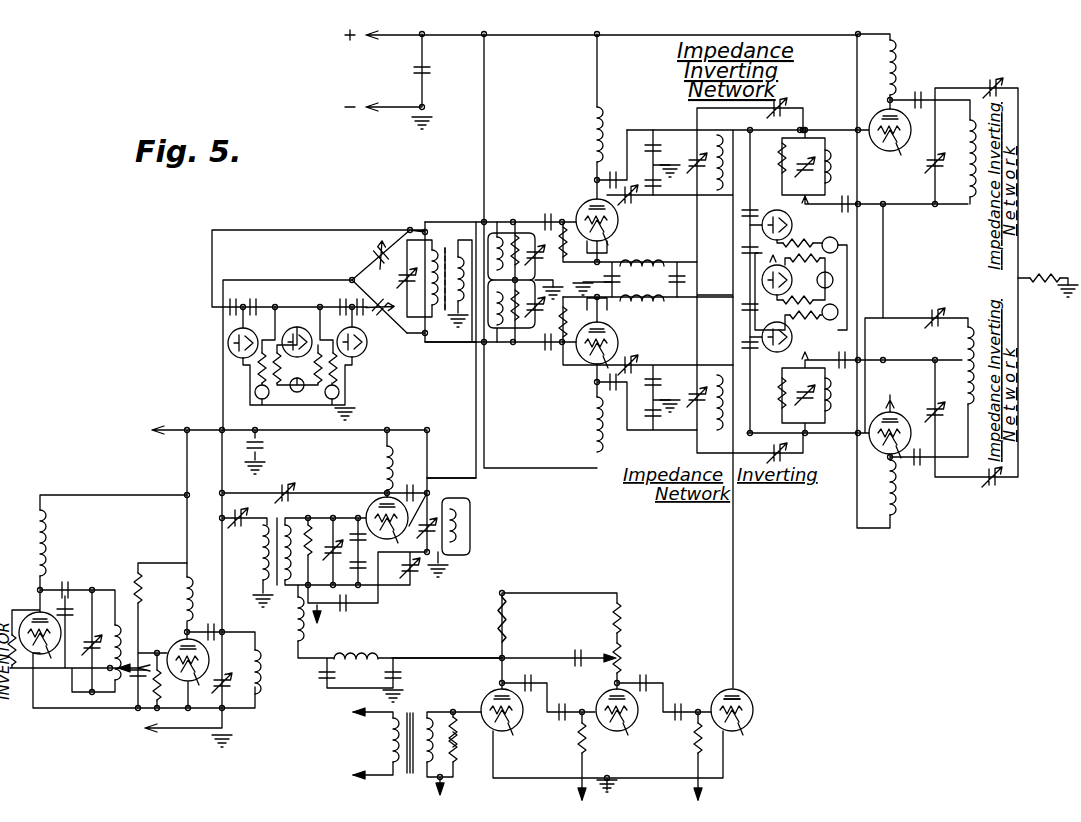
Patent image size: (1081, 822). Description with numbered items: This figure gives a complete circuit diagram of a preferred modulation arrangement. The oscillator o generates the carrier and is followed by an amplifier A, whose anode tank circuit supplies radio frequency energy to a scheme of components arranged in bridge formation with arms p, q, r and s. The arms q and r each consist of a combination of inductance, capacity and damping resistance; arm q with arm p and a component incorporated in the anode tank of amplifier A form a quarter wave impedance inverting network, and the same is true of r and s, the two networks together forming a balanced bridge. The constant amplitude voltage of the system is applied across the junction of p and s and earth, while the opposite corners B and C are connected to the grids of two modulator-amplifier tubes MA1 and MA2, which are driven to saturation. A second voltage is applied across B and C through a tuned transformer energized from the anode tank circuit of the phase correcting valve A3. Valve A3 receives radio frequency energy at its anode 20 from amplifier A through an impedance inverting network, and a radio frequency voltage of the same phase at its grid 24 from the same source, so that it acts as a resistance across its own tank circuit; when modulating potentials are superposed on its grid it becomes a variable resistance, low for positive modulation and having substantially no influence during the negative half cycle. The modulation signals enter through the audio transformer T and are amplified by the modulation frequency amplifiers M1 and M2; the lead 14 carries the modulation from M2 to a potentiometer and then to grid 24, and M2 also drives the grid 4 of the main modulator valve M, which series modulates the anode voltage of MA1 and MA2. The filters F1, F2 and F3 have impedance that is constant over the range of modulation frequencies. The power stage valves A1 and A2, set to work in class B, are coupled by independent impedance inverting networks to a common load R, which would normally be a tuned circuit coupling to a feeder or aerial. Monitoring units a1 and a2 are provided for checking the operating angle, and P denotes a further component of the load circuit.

The power stage valve A1 is at (872, 118).
The power stage valve A2 is at (871, 447).
The phase correcting valve A3 is at (396, 498).
The amplifier A is at (174, 640).
The monitoring unit a1 is at (307, 398).
The monitoring unit a2 is at (838, 268).
The bridge point B is at (444, 222).
The bridge point C is at (440, 343).
The bridge arm q is at (498, 233).
The bridge arm r is at (511, 334).
The bridge arm p is at (372, 252).
The bridge arm s is at (382, 330).
The modulator-amplifier tube MA1 is at (582, 203).
The modulator-amplifier tube MA2 is at (619, 343).
The filter F1 is at (646, 259).
The filter F2 is at (658, 301).
The filter F3 is at (357, 656).
The load R is at (1053, 275).
The potentiometer P is at (1018, 278).
The anode of A3 20 is at (384, 496).
The grid of A3 24 is at (366, 518).
The lead 14 is at (543, 656).
The modulation frequency amplifier M1 is at (489, 703).
The modulation frequency amplifier M2 is at (634, 731).
The modulator tube M is at (744, 732).
The grid 4 is at (753, 710).
The transformer T is at (417, 744).
The oscillator o is at (50, 674).